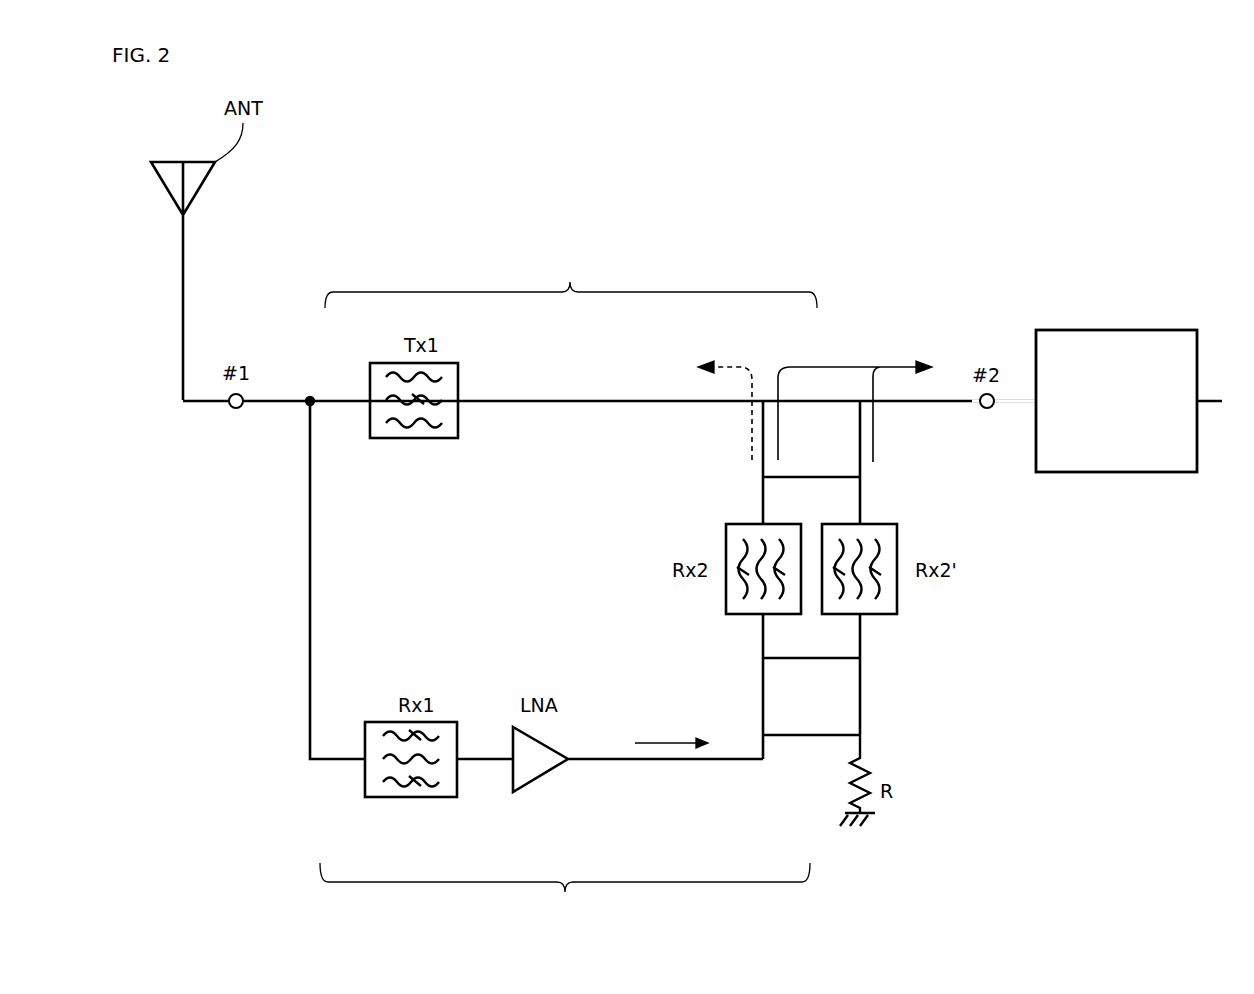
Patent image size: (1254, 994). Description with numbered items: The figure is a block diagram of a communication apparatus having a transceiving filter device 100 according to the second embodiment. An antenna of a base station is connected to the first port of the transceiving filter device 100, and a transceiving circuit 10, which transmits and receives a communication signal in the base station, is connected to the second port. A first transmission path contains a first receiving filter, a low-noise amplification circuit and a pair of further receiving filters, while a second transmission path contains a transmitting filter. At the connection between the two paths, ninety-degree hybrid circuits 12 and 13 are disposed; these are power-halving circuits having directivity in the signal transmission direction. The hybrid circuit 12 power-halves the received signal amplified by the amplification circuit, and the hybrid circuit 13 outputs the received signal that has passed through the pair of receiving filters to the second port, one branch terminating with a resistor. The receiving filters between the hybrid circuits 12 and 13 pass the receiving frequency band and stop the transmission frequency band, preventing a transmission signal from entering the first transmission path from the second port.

The transceiving filter device 100 is at (735, 198).
The transceiving circuit 10 is at (1124, 330).
The 90° hybrid circuit 12 is at (868, 658).
The 90° hybrid circuit 13 is at (878, 402).